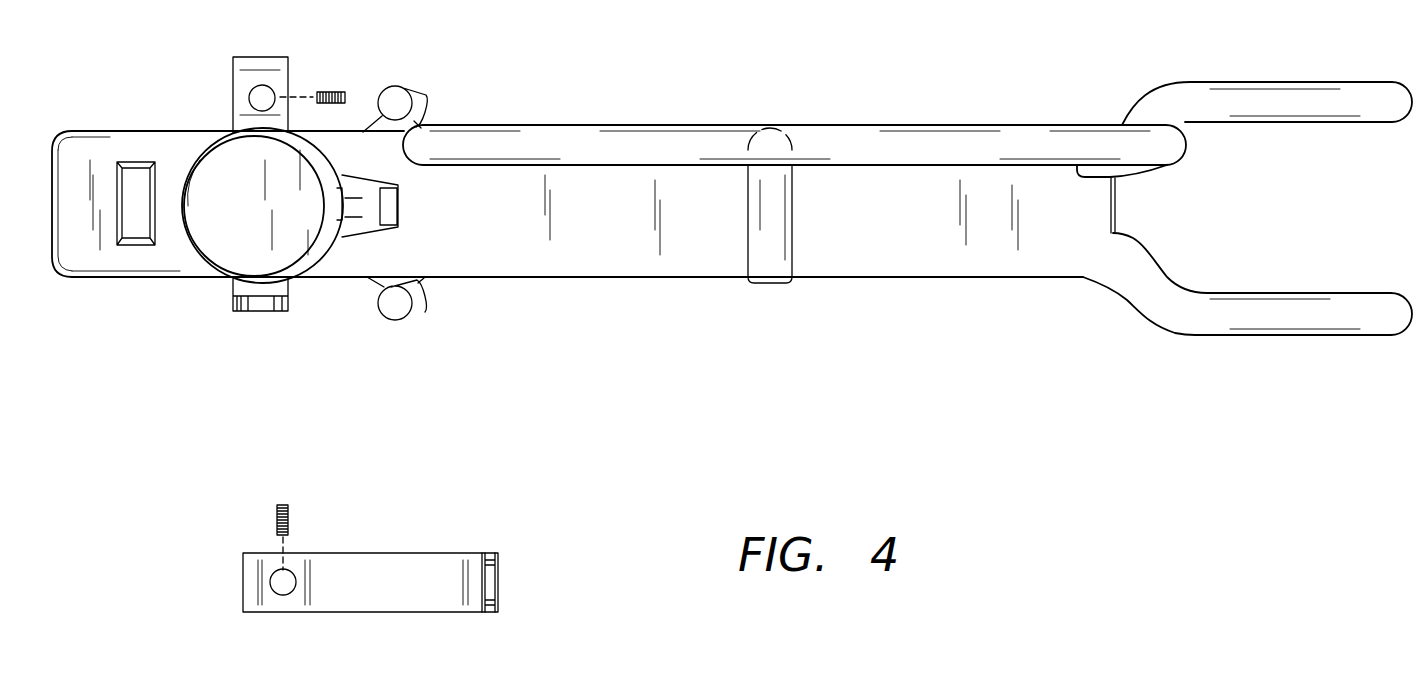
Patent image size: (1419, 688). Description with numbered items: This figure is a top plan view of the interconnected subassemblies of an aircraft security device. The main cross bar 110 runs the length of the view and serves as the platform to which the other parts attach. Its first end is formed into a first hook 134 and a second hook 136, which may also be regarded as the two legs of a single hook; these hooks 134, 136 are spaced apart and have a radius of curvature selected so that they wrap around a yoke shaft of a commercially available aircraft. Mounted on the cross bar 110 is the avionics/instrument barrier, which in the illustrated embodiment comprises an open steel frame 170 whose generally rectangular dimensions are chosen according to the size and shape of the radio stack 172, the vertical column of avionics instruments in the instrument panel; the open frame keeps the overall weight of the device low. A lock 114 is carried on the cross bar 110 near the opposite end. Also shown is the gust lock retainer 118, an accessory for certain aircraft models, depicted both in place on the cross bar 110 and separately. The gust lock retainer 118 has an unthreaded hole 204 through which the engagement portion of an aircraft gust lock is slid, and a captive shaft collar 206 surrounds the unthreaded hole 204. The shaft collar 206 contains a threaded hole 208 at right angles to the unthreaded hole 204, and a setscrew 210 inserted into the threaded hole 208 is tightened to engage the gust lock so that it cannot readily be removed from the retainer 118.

The main cross bar 110 is at (578, 262).
The lock 114 is at (220, 155).
The gust lock retainer 118 is at (233, 312).
The first hook 134 is at (1330, 302).
The second hook 136 is at (1333, 92).
The steel frame 170 is at (600, 135).
The radio stack 172 is at (772, 260).
The unthreaded hole 204 is at (260, 90).
The captive shaft collar 206 is at (233, 82).
The threaded hole 208 is at (290, 557).
The setscrew 210 is at (330, 93).